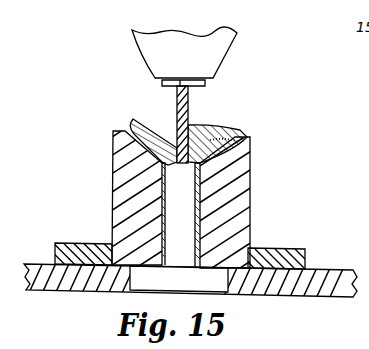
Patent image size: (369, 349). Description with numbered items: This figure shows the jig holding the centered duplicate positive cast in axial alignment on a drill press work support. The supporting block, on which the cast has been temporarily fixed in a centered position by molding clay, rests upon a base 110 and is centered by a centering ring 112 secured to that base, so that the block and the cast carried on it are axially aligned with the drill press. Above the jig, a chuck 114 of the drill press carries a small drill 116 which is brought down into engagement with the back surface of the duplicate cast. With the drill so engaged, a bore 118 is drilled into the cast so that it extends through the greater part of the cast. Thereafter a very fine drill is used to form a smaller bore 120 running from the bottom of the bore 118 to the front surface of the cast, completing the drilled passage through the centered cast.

The base 110 is at (315, 277).
The centering ring 112 is at (267, 249).
The chuck 114 is at (217, 62).
The small drill 116 is at (186, 109).
The bore 118 is at (223, 131).
The smaller bore 120 is at (196, 170).